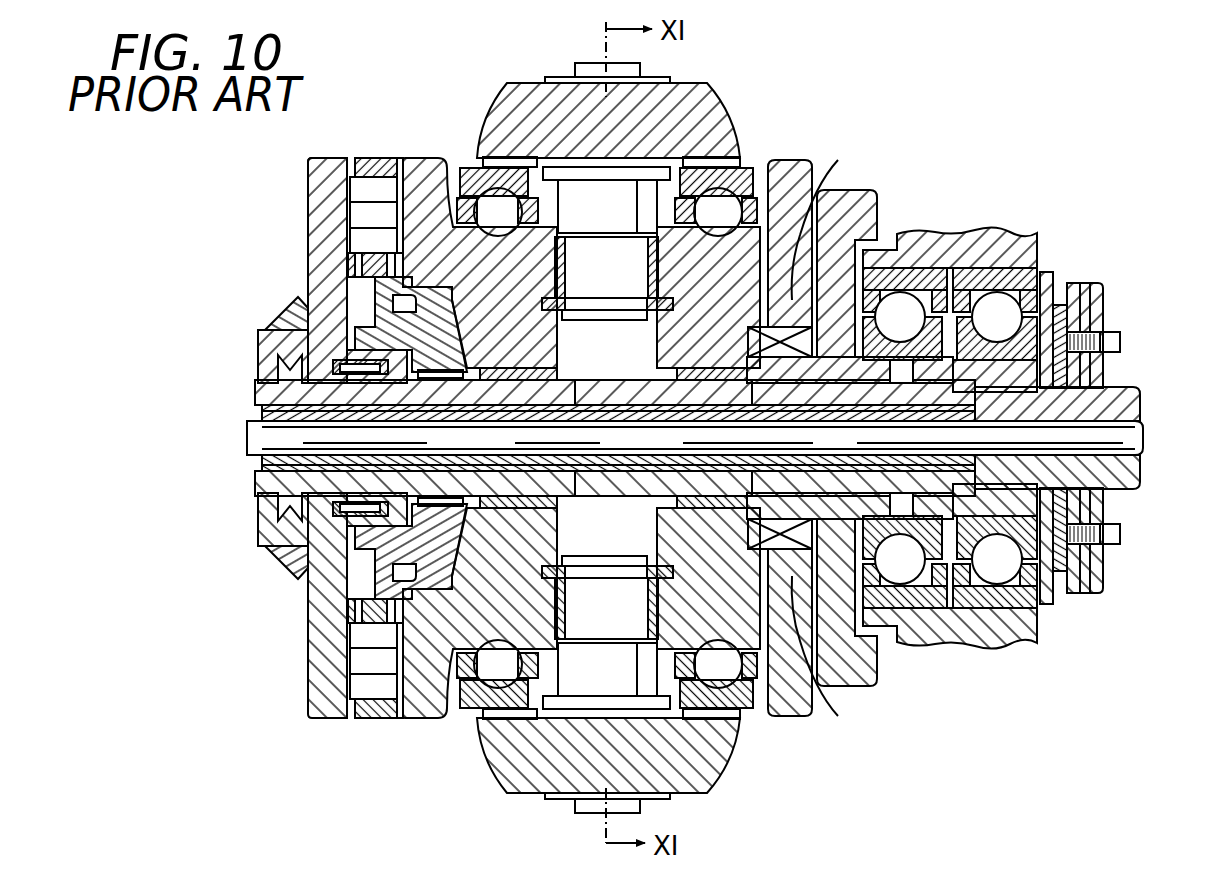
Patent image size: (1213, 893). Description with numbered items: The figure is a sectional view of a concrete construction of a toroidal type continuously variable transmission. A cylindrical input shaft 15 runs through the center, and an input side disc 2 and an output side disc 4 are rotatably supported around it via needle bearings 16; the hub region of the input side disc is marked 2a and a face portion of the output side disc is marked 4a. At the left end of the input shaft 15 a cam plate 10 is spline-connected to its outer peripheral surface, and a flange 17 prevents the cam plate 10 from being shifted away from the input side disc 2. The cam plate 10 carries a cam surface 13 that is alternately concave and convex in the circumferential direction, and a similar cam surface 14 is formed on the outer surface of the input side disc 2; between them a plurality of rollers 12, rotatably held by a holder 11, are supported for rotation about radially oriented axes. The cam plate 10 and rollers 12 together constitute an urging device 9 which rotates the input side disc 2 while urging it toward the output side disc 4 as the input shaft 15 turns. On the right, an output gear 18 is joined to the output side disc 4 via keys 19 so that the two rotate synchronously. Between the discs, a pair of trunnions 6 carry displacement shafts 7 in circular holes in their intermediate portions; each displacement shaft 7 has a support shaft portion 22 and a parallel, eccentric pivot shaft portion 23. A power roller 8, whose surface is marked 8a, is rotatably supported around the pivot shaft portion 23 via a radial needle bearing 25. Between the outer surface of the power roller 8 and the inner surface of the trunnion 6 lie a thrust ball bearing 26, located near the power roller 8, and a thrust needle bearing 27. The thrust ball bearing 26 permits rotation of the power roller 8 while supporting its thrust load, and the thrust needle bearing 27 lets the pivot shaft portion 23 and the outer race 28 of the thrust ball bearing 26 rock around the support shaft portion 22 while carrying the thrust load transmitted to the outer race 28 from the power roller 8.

The input side disc 2 is at (430, 167).
The hub sleeve 2a is at (615, 438).
The output side disc 4 is at (790, 170).
The flange face 4a is at (826, 425).
The trunnion 6 is at (712, 103).
The displacement shaft 7 is at (630, 185).
The power roller 8 is at (318, 308).
The ring flange 8a is at (360, 272).
The urging device 9 is at (320, 225).
The cam plate 10 is at (317, 176).
The holder 11 is at (373, 720).
The roller 12 is at (352, 183).
The cam surface 13 is at (360, 165).
The cam surface 14 is at (397, 162).
The input shaft 15 is at (1145, 420).
The needle bearing 16 is at (557, 372).
The flange 17 is at (313, 329).
The output gear 18 is at (868, 195).
The key 19 is at (797, 522).
The support shaft portion 22 is at (583, 65).
The pivot shaft portion 23 is at (583, 185).
The radial needle bearing 25 is at (648, 268).
The thrust ball bearing 26 is at (735, 195).
The thrust needle bearing 27 is at (688, 163).
The outer race 28 is at (462, 168).